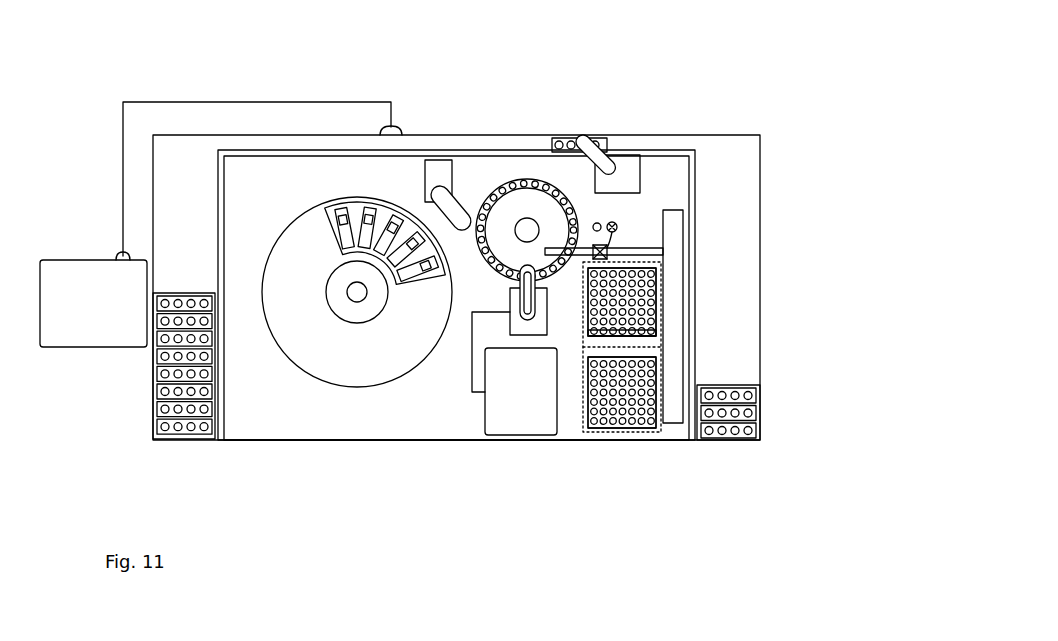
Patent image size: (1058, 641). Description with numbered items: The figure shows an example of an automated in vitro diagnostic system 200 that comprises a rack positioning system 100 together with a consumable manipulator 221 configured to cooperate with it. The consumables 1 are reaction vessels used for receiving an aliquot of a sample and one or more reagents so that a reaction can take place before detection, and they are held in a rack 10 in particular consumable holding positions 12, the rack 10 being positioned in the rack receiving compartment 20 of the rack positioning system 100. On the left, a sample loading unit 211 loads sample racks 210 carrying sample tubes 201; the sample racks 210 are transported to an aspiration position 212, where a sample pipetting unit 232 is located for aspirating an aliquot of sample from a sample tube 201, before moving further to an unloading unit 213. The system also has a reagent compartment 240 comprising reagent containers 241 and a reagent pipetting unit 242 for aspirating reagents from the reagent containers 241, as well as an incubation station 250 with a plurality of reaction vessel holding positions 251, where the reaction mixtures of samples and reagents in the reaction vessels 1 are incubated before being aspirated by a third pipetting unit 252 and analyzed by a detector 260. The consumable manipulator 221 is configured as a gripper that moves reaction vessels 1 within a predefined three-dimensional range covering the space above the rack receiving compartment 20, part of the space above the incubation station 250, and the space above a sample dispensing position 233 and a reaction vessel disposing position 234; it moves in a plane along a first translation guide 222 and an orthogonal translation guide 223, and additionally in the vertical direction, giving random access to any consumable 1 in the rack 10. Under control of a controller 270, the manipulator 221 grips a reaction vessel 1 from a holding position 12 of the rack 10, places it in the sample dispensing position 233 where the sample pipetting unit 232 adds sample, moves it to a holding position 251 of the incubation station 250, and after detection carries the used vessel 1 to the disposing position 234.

The automated in vitro diagnostic system 200 is at (757, 97).
The sample loading unit 211 is at (172, 201).
The controller 270 is at (89, 330).
The sample rack 210 is at (168, 440).
The sample tube 201 is at (205, 440).
The reagent compartment 240 is at (392, 212).
The reagent container 241 is at (357, 218).
The reagent pipetting unit 242 is at (440, 167).
The incubation station 250 is at (525, 185).
The reaction vessel holding position 251 is at (516, 188).
The third pipetting unit 252 is at (519, 280).
The detector 260 is at (486, 420).
The aspiration position 212 is at (583, 142).
The sample pipetting unit 232 is at (598, 222).
The sample dispensing position 233 is at (612, 222).
The reaction vessel disposing position 234 is at (655, 160).
The consumable manipulator 221 is at (617, 227).
The first translation guide 222 is at (643, 250).
The orthogonal translation guide 223 is at (683, 227).
The rack receiving compartment 20 is at (659, 272).
The rack 10 is at (659, 291).
The consumable holding position 12 is at (594, 331).
The rack positioning system 100 is at (660, 328).
The consumable 1 is at (593, 333).
The unloading unit 213 is at (757, 382).